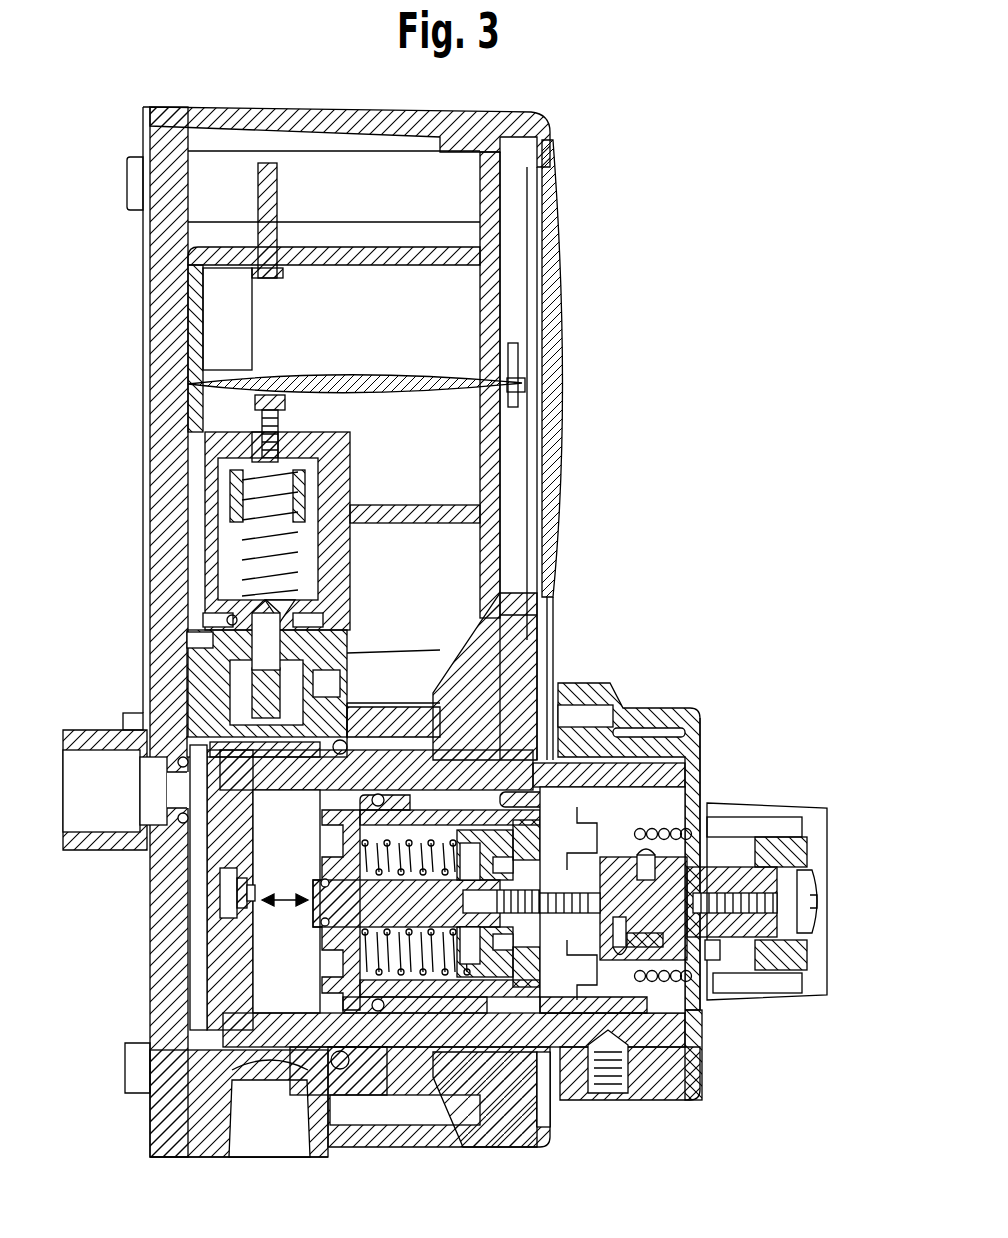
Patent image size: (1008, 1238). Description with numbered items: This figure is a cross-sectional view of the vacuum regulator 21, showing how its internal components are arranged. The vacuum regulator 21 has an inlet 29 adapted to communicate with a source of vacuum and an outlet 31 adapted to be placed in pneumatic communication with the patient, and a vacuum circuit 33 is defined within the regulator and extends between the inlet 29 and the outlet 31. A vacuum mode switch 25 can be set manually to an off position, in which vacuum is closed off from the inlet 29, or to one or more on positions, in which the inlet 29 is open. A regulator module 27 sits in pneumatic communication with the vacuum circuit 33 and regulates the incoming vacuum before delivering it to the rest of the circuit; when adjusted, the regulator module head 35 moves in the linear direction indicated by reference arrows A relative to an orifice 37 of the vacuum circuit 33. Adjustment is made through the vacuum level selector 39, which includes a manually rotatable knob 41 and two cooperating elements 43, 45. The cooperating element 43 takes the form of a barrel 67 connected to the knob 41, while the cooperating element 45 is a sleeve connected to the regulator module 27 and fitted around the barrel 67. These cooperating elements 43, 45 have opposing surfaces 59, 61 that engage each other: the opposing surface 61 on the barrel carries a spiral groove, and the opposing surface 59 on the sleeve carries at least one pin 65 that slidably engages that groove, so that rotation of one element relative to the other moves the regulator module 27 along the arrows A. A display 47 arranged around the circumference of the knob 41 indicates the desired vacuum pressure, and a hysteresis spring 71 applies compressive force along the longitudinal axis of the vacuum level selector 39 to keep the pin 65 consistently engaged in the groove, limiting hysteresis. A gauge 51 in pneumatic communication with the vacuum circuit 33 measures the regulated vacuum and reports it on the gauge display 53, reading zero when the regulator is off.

The vacuum regulator 21 is at (528, 116).
The vacuum mode switch 25 is at (645, 708).
The regulator module 27 is at (487, 1000).
The inlet 29 is at (70, 825).
The outlet 31 is at (282, 1148).
The vacuum circuit 33 is at (270, 828).
The regulator module head 35 is at (283, 905).
The orifice 37 is at (207, 907).
The vacuum level selector 39 is at (718, 792).
The knob 41 is at (820, 990).
The cooperating element 43 is at (745, 867).
The cooperating element 45 is at (745, 910).
The display 47 is at (700, 733).
The gauge 51 is at (243, 320).
The gauge display 53 is at (518, 282).
The opposing surface 59 is at (647, 877).
The opposing surface 61 is at (701, 950).
The pin 65 is at (623, 925).
The barrel 67 is at (668, 912).
The hysteresis spring 71 is at (661, 990).
The reference arrows A is at (250, 930).